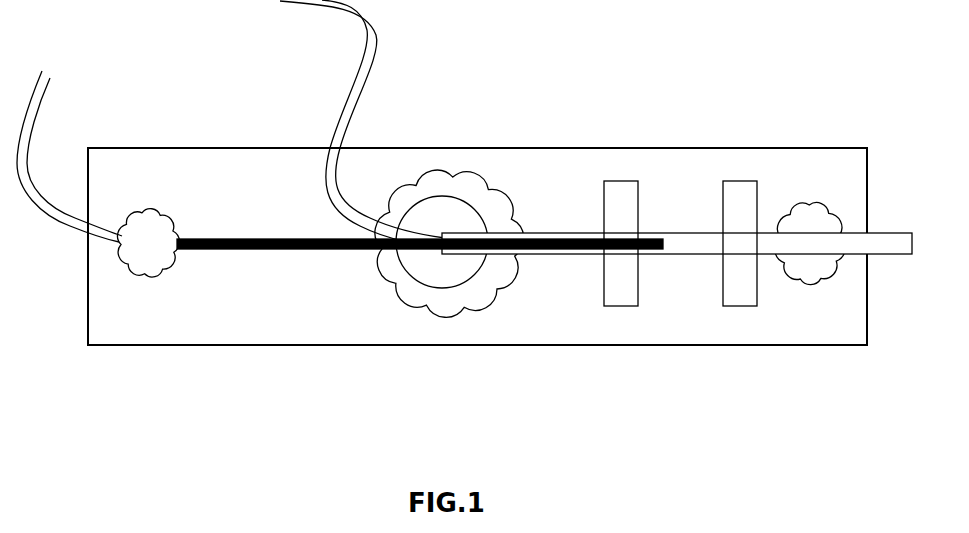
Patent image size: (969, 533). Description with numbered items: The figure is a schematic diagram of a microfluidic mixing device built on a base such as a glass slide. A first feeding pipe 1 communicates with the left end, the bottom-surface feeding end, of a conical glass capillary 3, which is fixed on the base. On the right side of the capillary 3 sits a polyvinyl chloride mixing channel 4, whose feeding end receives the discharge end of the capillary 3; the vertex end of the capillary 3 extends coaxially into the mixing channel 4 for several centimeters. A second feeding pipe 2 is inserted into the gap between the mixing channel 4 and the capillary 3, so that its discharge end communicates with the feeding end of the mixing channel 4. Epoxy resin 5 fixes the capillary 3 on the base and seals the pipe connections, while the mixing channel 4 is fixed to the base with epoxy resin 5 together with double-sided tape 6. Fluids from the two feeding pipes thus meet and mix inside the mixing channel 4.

The first feeding pipe 1 is at (60, 137).
The second feeding pipe 2 is at (358, 92).
The capillary 3 is at (228, 250).
The mixing channel 4 is at (874, 233).
The epoxy resin 5 is at (150, 283).
The double-sided tape 6 is at (620, 306).